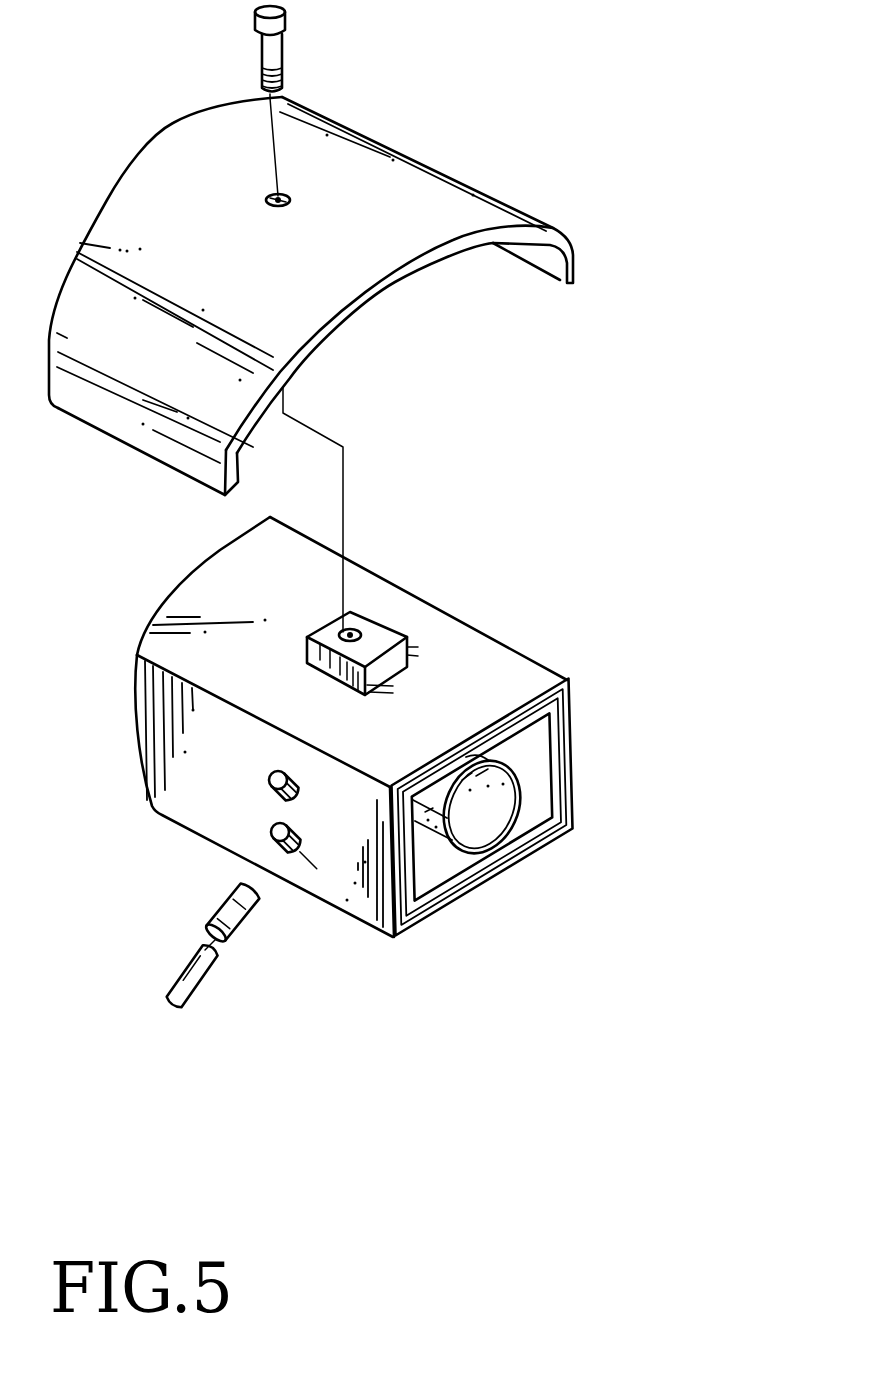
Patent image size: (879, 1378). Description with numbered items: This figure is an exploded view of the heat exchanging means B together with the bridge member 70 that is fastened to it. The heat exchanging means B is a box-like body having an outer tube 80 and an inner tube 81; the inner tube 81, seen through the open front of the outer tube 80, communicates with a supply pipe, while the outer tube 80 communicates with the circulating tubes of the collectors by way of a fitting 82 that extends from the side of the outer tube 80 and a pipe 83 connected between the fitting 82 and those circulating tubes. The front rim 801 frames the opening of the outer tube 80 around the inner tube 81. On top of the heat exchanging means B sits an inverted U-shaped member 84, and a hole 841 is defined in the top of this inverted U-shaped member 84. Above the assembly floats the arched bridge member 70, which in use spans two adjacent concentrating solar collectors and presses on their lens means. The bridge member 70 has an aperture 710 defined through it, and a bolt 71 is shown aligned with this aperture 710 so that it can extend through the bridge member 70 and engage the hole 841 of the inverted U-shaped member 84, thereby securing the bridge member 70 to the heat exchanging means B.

The bridge member 70 is at (311, 346).
The bolt 71 is at (270, 53).
The aperture 710 is at (267, 194).
The heat exchanging means B is at (517, 612).
The outer tube 80 is at (555, 753).
The front opening frame 801 is at (567, 700).
The inner tube 81 is at (473, 830).
The fitting 82 is at (288, 848).
The pipe 83 is at (245, 927).
The inverted U-shaped member 84 is at (291, 601).
The hole 841 is at (323, 630).